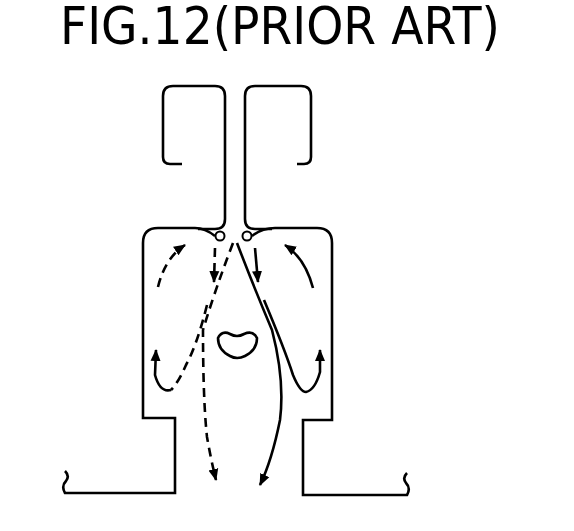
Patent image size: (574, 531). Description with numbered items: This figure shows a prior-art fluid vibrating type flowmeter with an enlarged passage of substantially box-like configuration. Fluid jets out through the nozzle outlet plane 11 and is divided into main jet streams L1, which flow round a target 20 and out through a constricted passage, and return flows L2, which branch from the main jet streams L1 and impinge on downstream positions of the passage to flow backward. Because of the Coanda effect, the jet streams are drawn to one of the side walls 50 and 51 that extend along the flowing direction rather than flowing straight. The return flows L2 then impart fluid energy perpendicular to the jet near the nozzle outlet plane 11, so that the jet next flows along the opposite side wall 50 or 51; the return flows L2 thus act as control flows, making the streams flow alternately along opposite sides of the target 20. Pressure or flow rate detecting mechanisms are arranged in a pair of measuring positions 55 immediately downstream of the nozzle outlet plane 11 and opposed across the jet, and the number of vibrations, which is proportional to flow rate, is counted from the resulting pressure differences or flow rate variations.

The nozzle outlet plane 11 is at (243, 222).
The measuring positions 55 is at (192, 229).
The side wall 50 is at (332, 300).
The side wall 51 is at (143, 302).
The target 20 is at (237, 355).
The main jet streams L1 is at (210, 440).
The return flows L2 is at (150, 377).